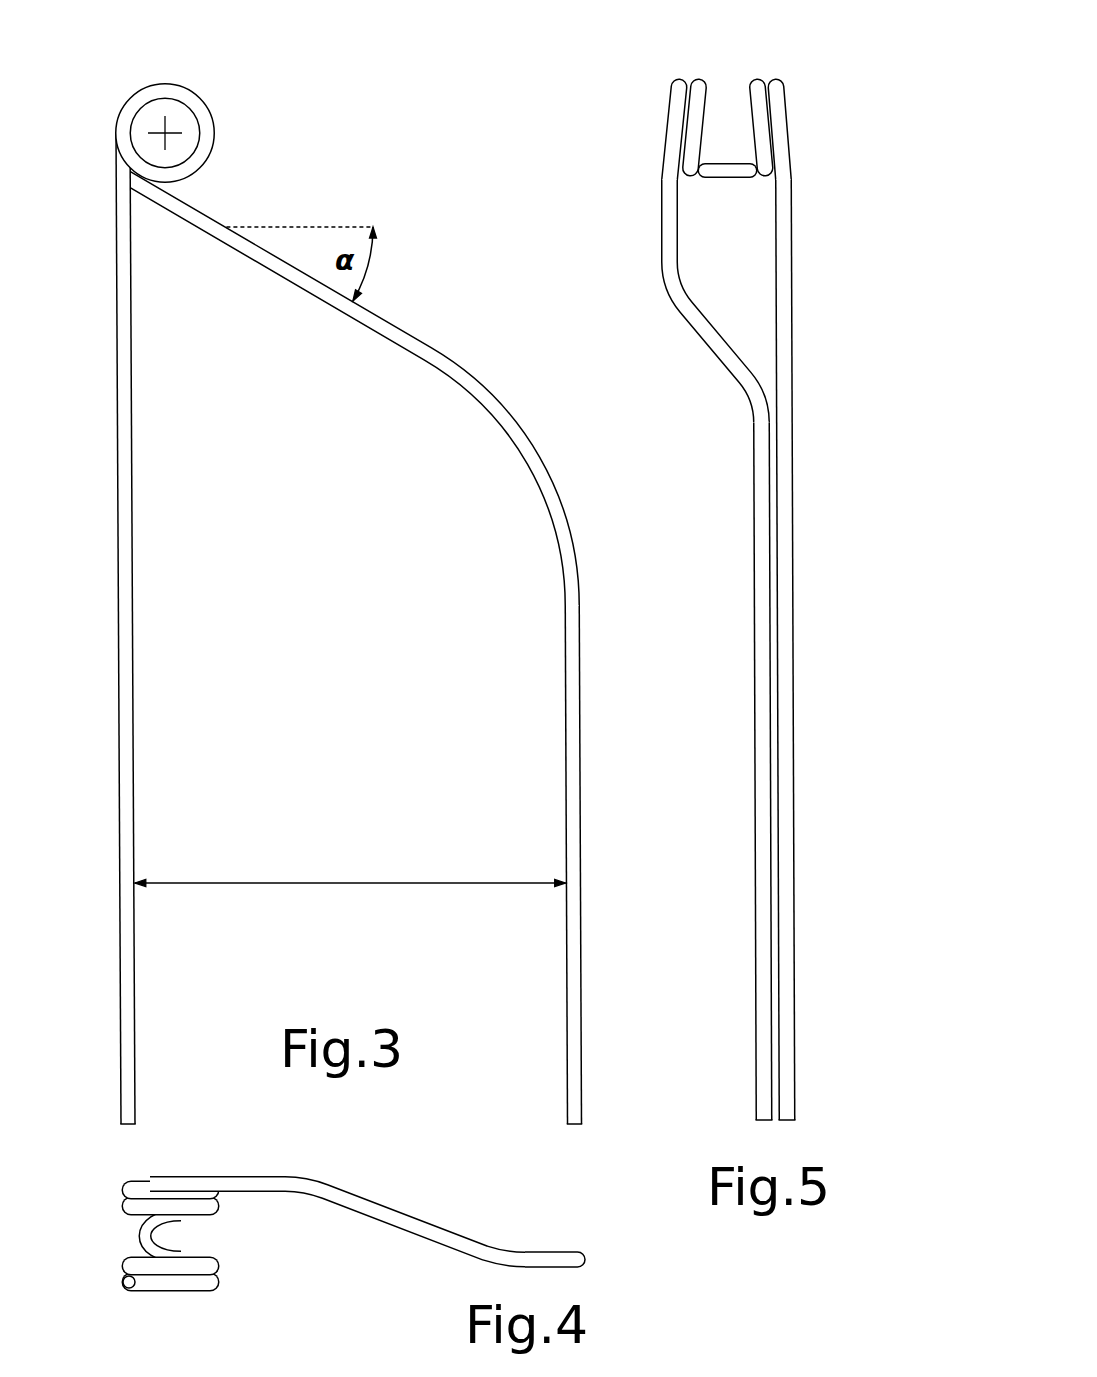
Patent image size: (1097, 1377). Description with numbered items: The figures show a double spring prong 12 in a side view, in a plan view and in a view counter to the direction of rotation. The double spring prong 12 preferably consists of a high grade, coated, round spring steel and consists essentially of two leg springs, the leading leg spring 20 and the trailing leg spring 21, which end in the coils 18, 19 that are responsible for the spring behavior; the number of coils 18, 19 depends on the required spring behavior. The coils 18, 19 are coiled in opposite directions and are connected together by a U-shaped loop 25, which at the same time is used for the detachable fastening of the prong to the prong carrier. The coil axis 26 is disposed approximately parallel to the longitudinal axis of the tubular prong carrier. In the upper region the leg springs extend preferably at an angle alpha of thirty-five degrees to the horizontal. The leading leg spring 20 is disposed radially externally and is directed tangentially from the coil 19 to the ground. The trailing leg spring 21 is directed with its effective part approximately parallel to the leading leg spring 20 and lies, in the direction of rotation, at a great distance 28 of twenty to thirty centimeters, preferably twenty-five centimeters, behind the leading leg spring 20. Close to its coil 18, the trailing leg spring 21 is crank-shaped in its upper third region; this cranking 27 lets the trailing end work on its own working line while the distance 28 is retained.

In FIG. 3, the double spring prong 12 is at (456, 334).
In FIG. 4, the coil 18 is at (107, 1192).
In FIG. 5, the coil 18 is at (688, 67).
In FIG. 4, the coil 19 is at (107, 1277).
In FIG. 5, the coil 19 is at (765, 67).
In FIG. 3, the leading leg spring 20 is at (123, 800).
In FIG. 5, the leading leg spring 20 is at (792, 940).
In FIG. 3, the trailing leg spring 21 is at (571, 795).
In FIG. 4, the trailing leg spring 21 is at (557, 1252).
In FIG. 5, the trailing leg spring 21 is at (763, 940).
In FIG. 4, the U-shaped loop 25 is at (150, 1236).
In FIG. 5, the U-shaped loop 25 is at (726, 178).
In FIG. 3, the coil axis 26 is at (165, 130).
In FIG. 4, the cranking 27 is at (427, 1190).
In FIG. 5, the cranking 27 is at (688, 363).
In FIG. 3, the distance 28 is at (352, 883).